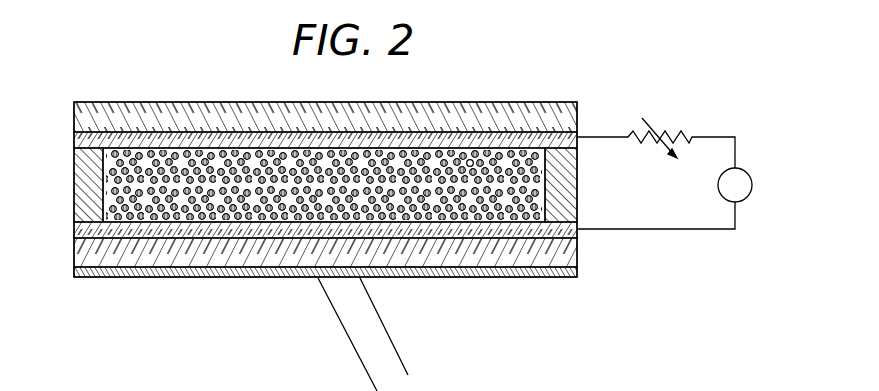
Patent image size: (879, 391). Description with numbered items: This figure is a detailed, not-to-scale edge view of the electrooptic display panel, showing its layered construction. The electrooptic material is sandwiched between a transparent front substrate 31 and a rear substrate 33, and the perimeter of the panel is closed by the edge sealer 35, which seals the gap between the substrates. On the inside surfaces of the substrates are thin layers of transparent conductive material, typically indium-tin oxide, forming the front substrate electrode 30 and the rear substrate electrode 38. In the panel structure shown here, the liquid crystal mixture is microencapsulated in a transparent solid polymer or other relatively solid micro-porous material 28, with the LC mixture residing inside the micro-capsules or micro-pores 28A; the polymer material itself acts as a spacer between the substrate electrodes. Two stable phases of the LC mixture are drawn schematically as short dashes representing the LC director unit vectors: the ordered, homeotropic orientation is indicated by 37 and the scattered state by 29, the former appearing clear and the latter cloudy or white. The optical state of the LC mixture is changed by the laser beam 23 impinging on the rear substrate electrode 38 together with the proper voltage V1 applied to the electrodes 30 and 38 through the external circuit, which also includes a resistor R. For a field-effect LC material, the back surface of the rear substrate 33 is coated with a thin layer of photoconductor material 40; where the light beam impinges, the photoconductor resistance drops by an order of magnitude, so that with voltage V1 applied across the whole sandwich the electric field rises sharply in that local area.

The front substrate 31 is at (86, 112).
The front substrate electrode 30 is at (82, 137).
The edge sealer 35 is at (80, 178).
The scattered state of the LC mixture 29 is at (279, 160).
The micro-capsules or micro-pores 28A is at (190, 158).
The ordered state of the LC mixture 37 is at (472, 158).
The rear substrate electrode 38 is at (82, 231).
The rear substrate 33 is at (86, 252).
The photoconductor material 40 is at (76, 272).
The micro-porous material 28 is at (485, 222).
The laser beam 23 is at (357, 356).
The variable resistor R is at (656, 135).
The voltage V1 is at (676, 198).